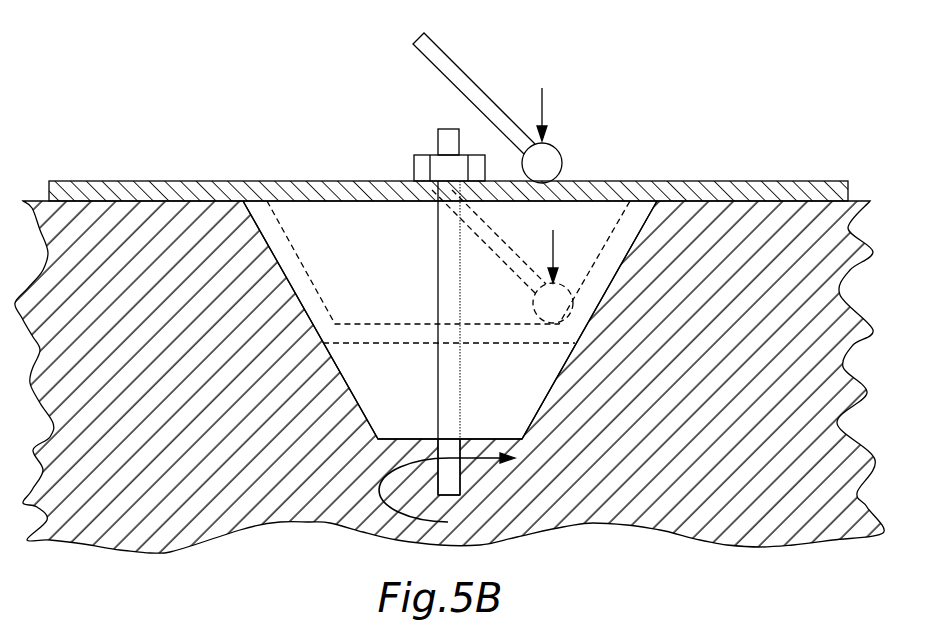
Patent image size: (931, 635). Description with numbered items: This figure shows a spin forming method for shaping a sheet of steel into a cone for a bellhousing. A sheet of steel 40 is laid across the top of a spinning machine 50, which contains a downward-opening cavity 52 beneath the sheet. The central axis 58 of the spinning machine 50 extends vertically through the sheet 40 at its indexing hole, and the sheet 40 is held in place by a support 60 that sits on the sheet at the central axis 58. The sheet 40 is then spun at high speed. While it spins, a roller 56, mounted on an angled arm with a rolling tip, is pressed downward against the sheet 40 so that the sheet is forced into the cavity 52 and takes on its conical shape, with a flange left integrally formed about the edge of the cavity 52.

The sheet of steel 40 is at (118, 181).
The spinning machine 50 is at (416, 264).
The cavity 52 is at (351, 366).
The roller 56 is at (457, 63).
The central axis 58 is at (448, 128).
The support 60 is at (413, 162).